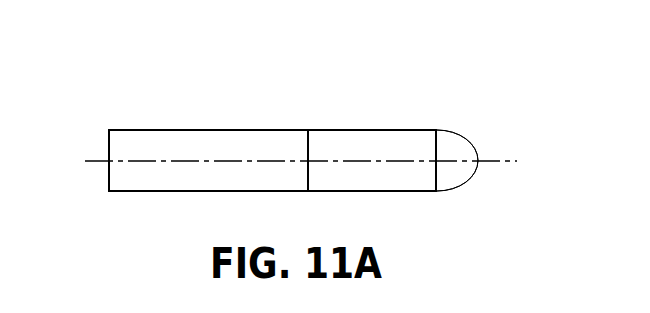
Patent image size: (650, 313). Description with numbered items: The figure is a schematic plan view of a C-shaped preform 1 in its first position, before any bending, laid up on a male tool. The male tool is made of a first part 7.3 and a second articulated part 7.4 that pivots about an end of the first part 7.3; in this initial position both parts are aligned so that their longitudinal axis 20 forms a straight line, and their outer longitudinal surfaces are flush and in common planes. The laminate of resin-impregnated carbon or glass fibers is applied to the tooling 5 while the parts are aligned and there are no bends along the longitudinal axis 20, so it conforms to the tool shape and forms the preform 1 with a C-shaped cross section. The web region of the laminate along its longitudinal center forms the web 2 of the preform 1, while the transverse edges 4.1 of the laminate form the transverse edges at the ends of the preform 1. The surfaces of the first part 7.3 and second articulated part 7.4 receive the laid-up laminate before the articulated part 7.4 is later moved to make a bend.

The preform 1 is at (245, 87).
The web 2 is at (138, 182).
The transverse edges 4.1 is at (109, 137).
The tooling 5 is at (450, 172).
The first part 7.3 is at (190, 97).
The second articulated part 7.4 is at (453, 148).
The longitudinal axis 20 is at (348, 160).